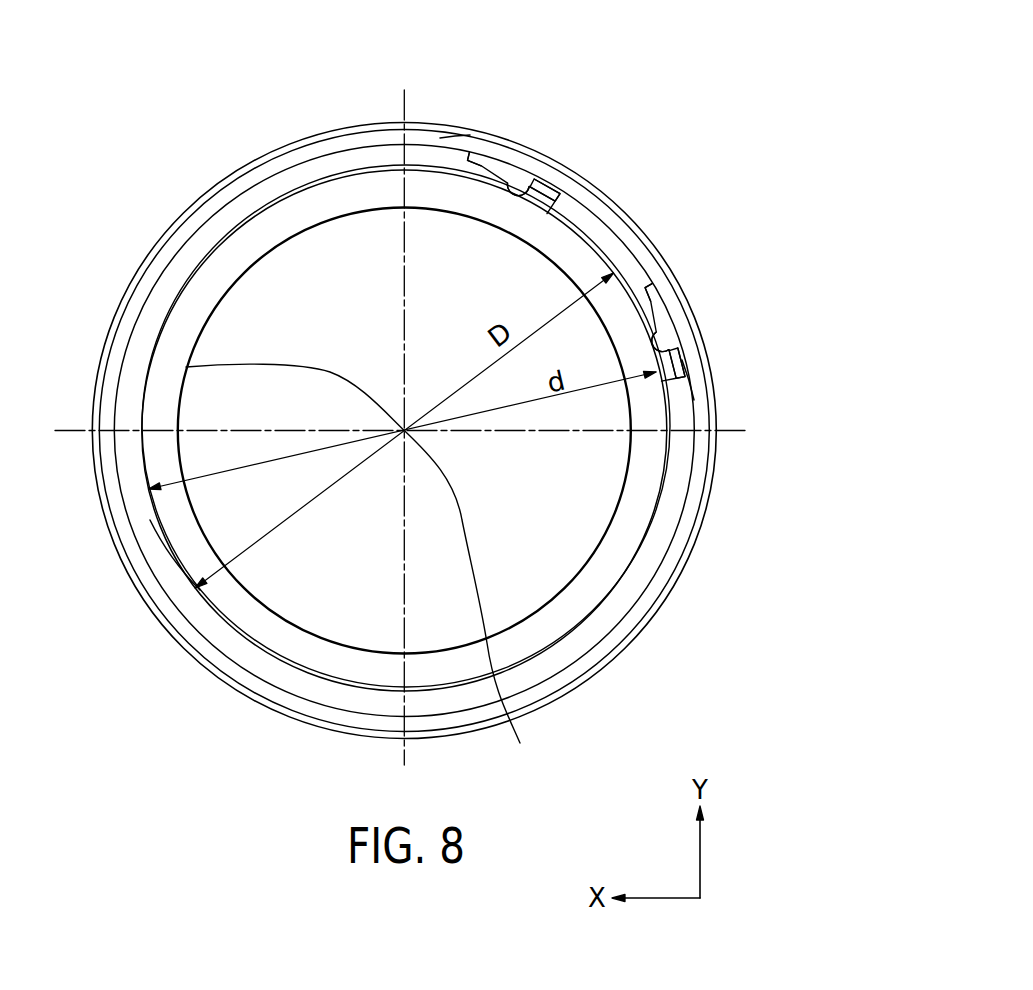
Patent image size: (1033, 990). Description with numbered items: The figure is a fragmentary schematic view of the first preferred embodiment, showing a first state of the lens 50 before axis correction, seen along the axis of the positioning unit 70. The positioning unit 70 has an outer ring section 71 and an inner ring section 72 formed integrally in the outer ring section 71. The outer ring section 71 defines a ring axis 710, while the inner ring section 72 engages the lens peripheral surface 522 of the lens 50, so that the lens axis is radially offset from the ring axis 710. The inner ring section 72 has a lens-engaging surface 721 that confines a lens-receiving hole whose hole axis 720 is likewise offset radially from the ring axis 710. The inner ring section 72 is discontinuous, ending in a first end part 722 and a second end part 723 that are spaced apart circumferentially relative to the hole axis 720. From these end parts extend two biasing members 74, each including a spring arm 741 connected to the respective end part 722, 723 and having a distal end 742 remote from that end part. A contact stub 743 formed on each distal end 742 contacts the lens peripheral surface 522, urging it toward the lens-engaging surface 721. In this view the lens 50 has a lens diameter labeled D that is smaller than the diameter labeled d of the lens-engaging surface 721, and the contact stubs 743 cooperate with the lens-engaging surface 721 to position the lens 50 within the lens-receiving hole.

The lens 50 is at (343, 190).
The positioning unit 70 is at (289, 132).
The outer ring section 71 is at (198, 213).
The inner ring section 72 is at (252, 196).
The biasing member 74 is at (487, 156).
The lens peripheral surface 522 is at (557, 217).
The ring axis 710 is at (475, 602).
The hole axis 720 is at (185, 367).
The lens-engaging surface 721 is at (170, 560).
The first end part 722 is at (683, 383).
The second end part 723 is at (452, 150).
The spring arm 741 is at (513, 180).
The distal end 742 is at (530, 186).
The contact stub 743 is at (527, 198).